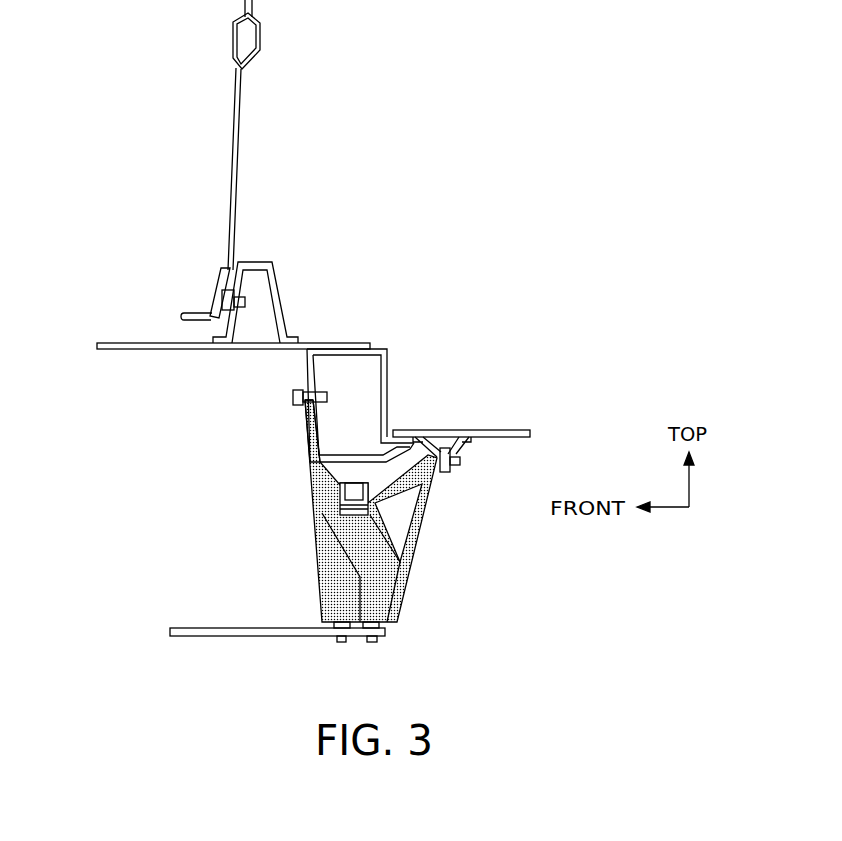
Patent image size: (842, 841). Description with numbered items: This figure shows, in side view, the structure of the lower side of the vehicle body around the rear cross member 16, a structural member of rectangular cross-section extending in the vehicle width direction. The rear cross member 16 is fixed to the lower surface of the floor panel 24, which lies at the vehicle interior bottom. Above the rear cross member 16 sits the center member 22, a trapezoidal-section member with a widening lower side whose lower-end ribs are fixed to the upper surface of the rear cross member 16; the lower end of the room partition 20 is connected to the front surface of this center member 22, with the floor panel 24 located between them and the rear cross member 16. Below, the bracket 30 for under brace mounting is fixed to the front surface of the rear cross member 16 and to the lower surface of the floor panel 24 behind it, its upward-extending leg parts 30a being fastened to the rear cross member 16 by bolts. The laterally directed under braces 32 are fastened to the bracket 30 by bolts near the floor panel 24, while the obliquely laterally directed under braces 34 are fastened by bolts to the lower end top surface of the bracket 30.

The rear cross member 16 is at (388, 378).
The room partition 20 is at (215, 181).
The center member 22 is at (277, 280).
The floor panel 24 is at (125, 342).
The bracket 30 is at (474, 548).
The leg parts 30a is at (306, 437).
The under braces directed laterally 32 is at (348, 515).
The under braces directed obliquely laterally 34 is at (187, 632).